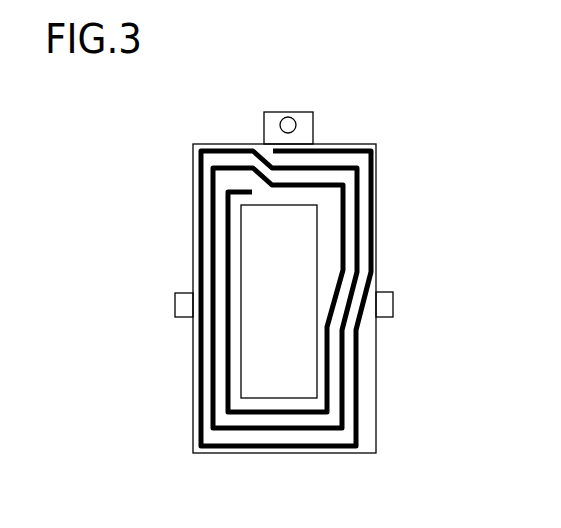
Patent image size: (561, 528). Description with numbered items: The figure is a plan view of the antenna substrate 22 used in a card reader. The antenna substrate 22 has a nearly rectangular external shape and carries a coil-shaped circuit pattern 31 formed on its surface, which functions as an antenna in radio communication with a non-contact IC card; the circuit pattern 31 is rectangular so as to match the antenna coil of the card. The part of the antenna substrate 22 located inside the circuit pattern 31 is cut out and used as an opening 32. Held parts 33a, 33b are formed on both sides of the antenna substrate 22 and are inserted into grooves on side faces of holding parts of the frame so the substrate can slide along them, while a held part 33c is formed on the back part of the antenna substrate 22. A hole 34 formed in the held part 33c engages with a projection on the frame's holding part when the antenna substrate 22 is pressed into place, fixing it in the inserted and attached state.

The antenna substrate 22 is at (290, 68).
The circuit pattern 31 is at (302, 430).
The opening 32 is at (271, 275).
The held part 33a is at (181, 304).
The held part 33b is at (383, 306).
The held part 33c is at (313, 117).
The hole 34 is at (293, 118).